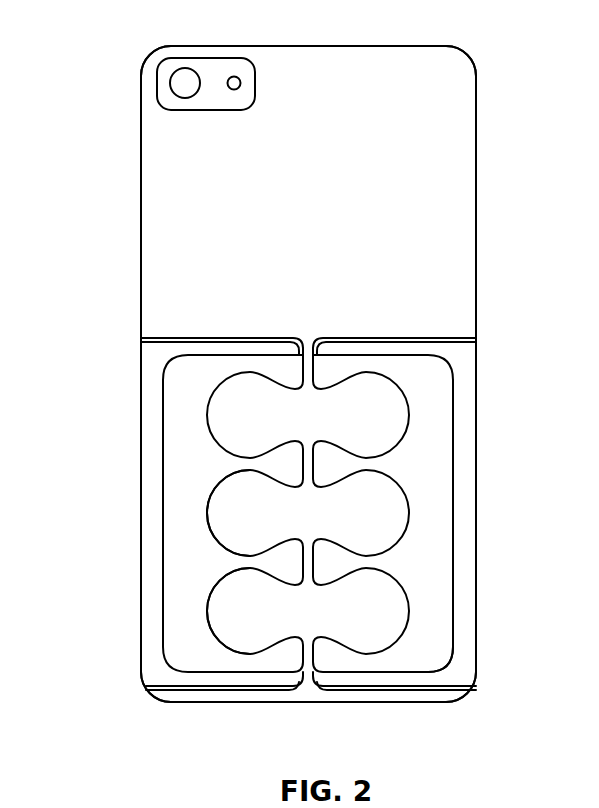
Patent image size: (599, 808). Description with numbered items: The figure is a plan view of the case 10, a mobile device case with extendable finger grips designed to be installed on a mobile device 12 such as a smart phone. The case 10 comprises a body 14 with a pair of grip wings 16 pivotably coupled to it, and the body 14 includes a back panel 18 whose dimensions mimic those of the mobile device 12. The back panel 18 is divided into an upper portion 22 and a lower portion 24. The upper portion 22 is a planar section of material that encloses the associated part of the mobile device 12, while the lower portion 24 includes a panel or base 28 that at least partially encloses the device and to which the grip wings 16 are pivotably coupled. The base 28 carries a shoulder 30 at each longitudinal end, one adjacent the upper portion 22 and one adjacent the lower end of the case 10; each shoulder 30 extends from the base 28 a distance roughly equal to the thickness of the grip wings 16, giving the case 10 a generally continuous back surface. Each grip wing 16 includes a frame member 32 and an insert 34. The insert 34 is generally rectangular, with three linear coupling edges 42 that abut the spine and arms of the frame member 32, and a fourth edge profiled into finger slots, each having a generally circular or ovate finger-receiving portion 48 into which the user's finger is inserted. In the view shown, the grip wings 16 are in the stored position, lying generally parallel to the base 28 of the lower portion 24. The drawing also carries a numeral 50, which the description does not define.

The case 10 is at (110, 450).
The mobile device 12 is at (240, 77).
The body 14 is at (427, 46).
The grip wings 16 is at (200, 338).
The back panel 18 is at (457, 100).
The upper portion 22 is at (110, 208).
The lower portion 24 is at (80, 490).
The base 28 is at (393, 407).
The shoulder 30 is at (418, 339).
The frame member 32 is at (463, 475).
The insert 34 is at (428, 563).
The coupling edges 42 is at (248, 372).
The finger-receiving portion 48 is at (243, 611).
The second lobe surface 50 is at (292, 516).